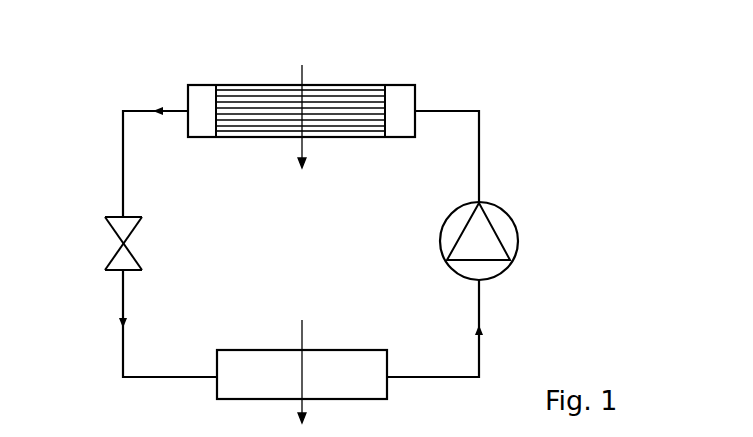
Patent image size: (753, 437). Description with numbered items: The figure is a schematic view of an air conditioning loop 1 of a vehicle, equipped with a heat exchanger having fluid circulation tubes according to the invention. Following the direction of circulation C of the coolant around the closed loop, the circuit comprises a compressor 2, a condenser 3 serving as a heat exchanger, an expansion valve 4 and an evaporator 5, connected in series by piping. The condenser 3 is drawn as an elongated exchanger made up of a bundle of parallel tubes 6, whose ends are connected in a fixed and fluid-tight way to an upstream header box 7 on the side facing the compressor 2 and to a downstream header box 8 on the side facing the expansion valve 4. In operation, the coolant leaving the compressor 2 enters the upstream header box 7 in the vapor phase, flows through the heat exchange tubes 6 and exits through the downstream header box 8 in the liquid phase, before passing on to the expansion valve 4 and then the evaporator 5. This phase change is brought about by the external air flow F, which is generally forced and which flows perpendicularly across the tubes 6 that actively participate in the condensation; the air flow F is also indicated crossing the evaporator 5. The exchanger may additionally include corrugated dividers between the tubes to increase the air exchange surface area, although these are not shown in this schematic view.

The air conditioning loop 1 is at (353, 236).
The compressor 2 is at (516, 241).
The condenser 3 is at (301, 102).
The expansion valve 4 is at (90, 243).
The evaporator 5 is at (302, 337).
The bundle of parallel tubes 6 is at (300, 72).
The upstream header box 7 is at (393, 144).
The downstream header box 8 is at (206, 142).
The direction of circulation C is at (264, 181).
The external air flow F is at (294, 239).